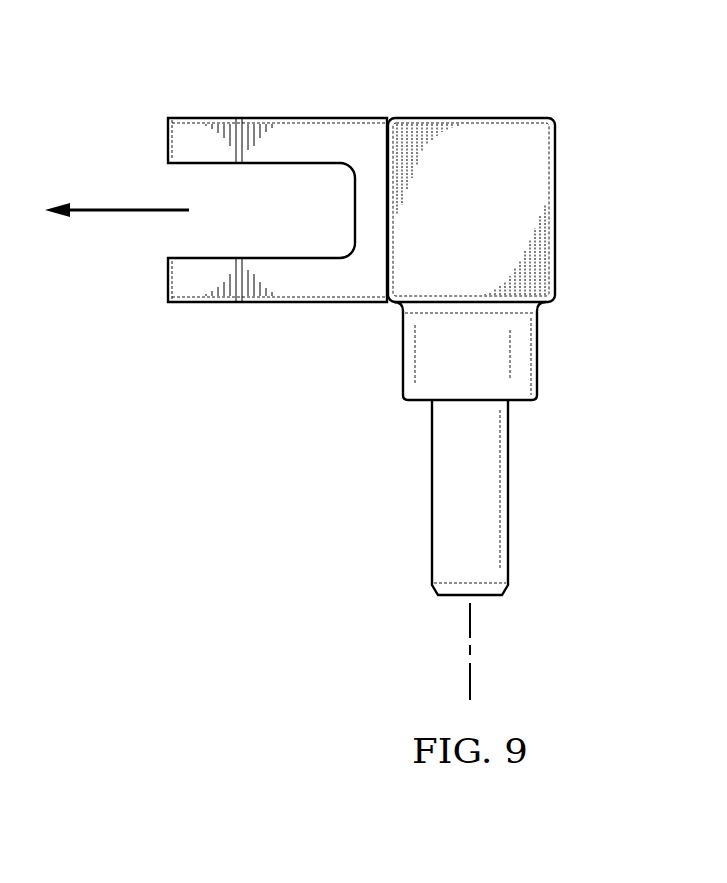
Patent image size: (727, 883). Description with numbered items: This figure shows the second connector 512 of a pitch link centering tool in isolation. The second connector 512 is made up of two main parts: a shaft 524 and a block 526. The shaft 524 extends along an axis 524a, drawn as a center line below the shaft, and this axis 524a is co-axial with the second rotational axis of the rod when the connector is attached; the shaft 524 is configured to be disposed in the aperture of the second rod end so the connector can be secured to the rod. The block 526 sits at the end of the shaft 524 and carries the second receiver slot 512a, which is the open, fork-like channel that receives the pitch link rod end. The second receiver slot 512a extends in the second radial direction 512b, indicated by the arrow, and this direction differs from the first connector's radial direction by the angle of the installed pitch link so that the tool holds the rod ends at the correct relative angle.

The second connector 512 is at (336, 367).
The second receiver slot 512a is at (186, 256).
The second radial direction 512b is at (112, 208).
The block 526 is at (556, 196).
The shaft 524 is at (508, 492).
The axis 524a is at (470, 683).